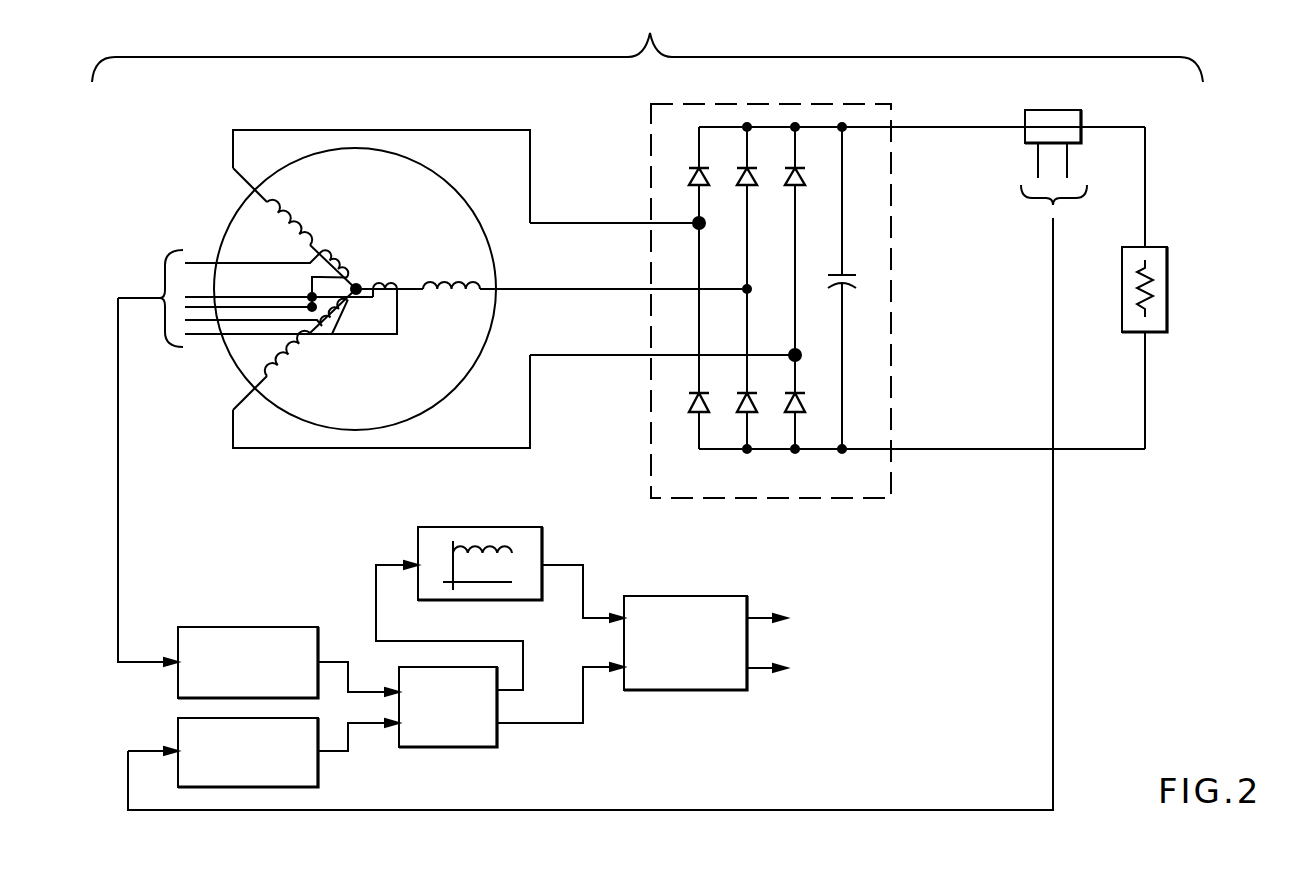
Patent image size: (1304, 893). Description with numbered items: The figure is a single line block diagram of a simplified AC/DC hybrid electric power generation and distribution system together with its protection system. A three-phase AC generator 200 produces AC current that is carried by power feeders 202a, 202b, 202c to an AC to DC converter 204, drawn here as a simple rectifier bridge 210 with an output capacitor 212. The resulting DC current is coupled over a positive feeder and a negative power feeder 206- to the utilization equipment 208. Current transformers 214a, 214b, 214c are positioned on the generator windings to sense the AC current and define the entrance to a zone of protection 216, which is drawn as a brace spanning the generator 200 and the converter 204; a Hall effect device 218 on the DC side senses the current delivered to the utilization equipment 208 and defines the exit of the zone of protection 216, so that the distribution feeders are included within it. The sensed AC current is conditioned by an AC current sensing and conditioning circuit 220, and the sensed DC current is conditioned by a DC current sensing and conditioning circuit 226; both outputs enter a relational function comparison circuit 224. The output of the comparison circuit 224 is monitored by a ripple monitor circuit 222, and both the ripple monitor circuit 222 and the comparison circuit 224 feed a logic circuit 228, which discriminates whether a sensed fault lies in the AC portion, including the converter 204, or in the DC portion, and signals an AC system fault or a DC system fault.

The AC generator 200 is at (433, 168).
The power feeder 202a is at (545, 223).
The power feeder 202b is at (520, 289).
The power feeder 202c is at (545, 355).
The AC to DC converter 204 is at (675, 104).
The power feeder 206- is at (912, 447).
The utilization equipment 208 is at (1167, 305).
The rectifier bridge 210 is at (745, 465).
The output capacitor 212 is at (847, 273).
The current transformer 214a is at (333, 253).
The current transformer 214b is at (373, 277).
The current transformer 214c is at (348, 328).
The zone of protection 216 is at (647, 43).
The Hall effect device 218 is at (1065, 110).
The AC current sensing and conditioning circuit 220 is at (228, 627).
The ripple monitor circuit 222 is at (447, 527).
The relational function comparison circuit 224 is at (478, 747).
The DC current sensing and conditioning circuit 226 is at (318, 768).
The logic circuit 228 is at (685, 690).